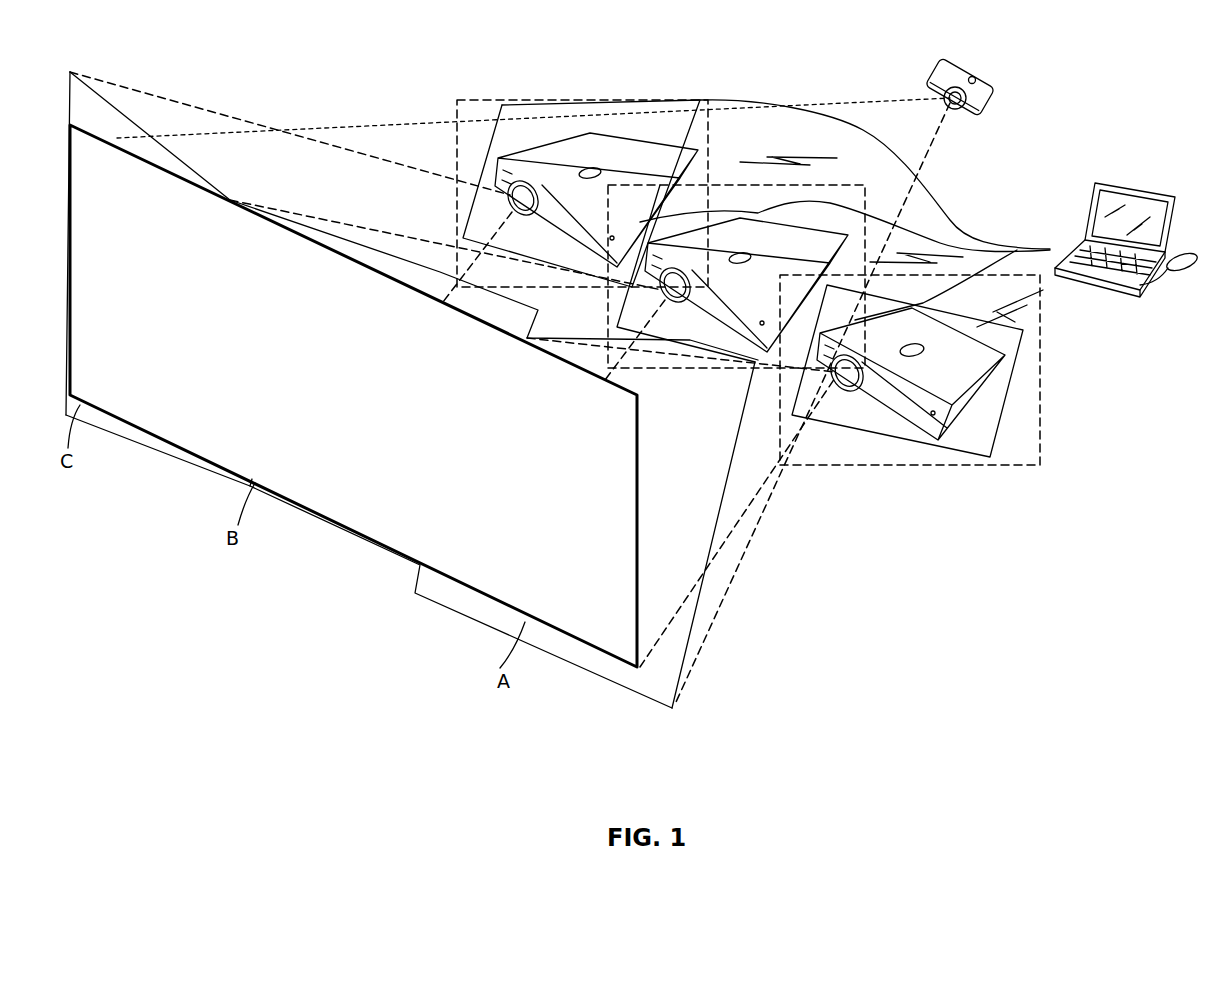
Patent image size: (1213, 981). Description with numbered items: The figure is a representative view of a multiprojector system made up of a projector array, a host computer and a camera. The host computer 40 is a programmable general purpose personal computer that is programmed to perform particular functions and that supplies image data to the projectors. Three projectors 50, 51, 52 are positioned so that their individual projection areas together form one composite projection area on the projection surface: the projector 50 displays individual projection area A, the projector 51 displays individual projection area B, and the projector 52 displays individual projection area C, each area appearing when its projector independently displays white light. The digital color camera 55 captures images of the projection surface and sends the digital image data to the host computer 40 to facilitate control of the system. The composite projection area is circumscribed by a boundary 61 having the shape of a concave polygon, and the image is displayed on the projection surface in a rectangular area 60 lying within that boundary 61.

The host computer 40 is at (1178, 207).
The projector 50 is at (955, 380).
The projector 51 is at (772, 288).
The projector 52 is at (565, 171).
The digital color camera 55 is at (933, 70).
The rectangular area 60 is at (145, 397).
The boundary 61 is at (627, 688).